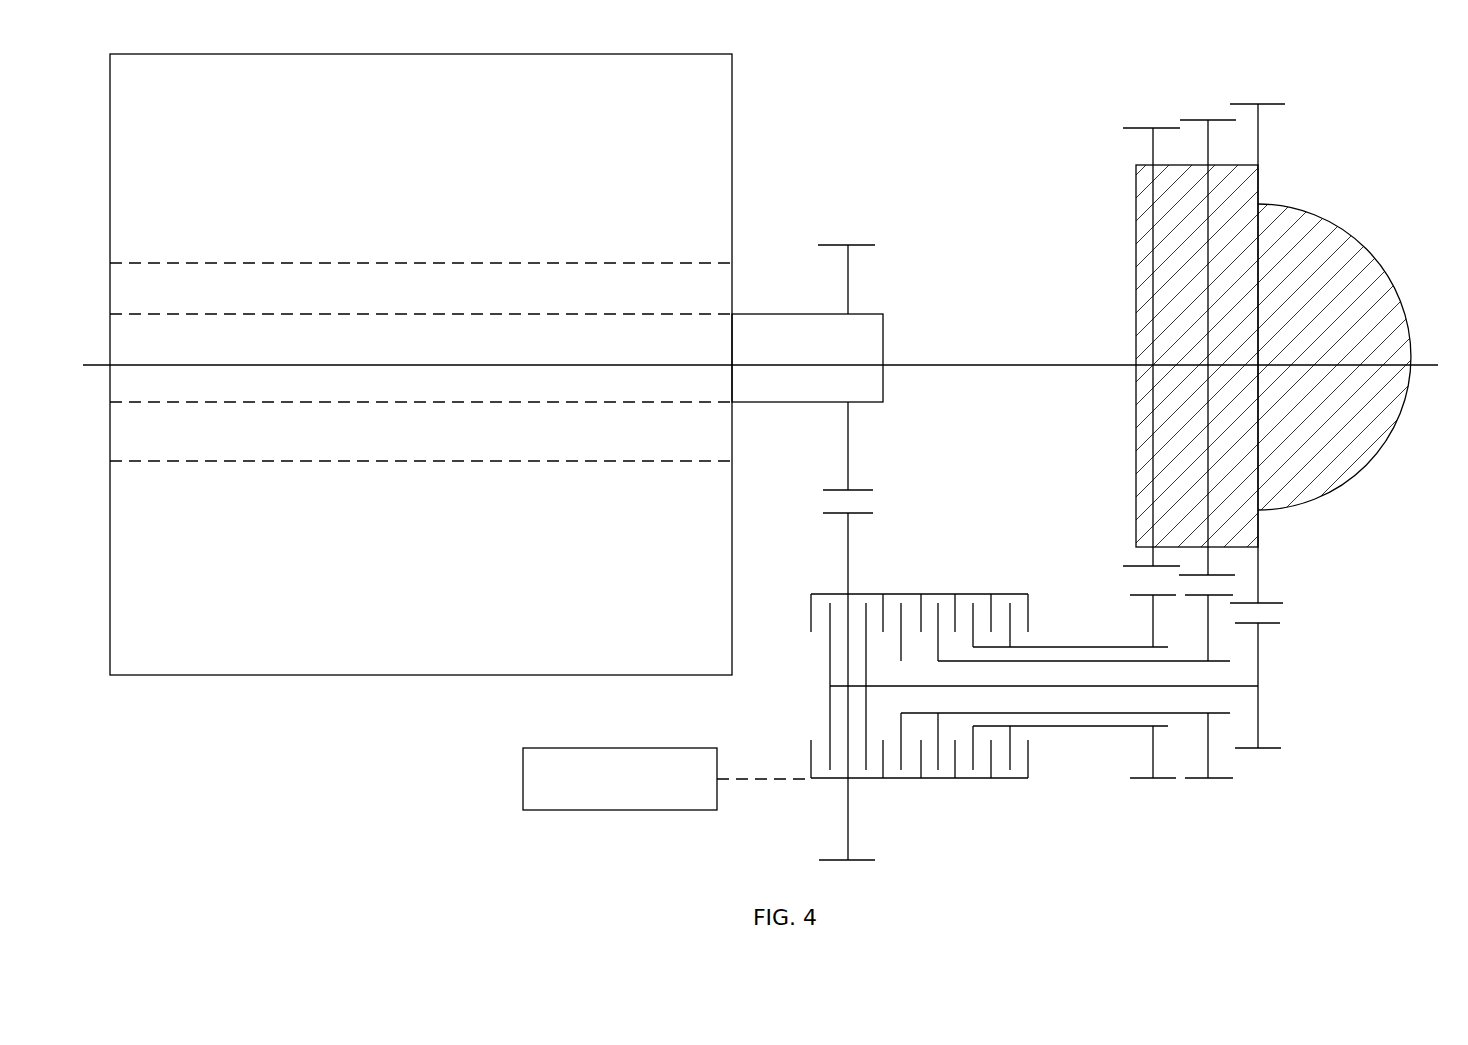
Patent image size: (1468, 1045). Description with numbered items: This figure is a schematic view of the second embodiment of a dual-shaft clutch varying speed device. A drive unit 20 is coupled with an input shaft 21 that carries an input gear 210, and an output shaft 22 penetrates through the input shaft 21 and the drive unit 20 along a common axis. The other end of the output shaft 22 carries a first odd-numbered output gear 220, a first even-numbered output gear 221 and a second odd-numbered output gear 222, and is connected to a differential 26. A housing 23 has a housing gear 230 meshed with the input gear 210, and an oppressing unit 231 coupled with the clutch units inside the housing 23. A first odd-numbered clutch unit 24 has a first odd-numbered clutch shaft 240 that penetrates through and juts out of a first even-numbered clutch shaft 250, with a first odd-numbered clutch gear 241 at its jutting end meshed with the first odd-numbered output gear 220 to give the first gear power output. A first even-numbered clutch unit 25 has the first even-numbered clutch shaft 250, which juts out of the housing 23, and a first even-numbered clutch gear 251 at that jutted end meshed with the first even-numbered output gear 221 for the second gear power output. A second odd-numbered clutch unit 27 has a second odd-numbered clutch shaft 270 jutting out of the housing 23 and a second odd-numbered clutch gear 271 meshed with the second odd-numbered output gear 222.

The drive unit 20 is at (208, 675).
The input shaft 21 is at (756, 314).
The input gear 210 is at (848, 284).
The output shaft 22 is at (978, 366).
The housing 23 is at (858, 783).
The housing gear 230 is at (870, 512).
The oppressing unit 231 is at (523, 772).
The first odd-numbered clutch unit 24 is at (830, 718).
The first odd-numbered clutch shaft 240 is at (1050, 686).
The first even-numbered clutch unit 25 is at (902, 752).
The first even-numbered clutch shaft 250 is at (1120, 713).
The first even-numbered clutch gear 251 is at (1208, 756).
The differential 26 is at (1368, 280).
The second odd-numbered clutch unit 27 is at (973, 757).
The second odd-numbered clutch shaft 270 is at (1055, 645).
The second odd-numbered clutch gear 271 is at (1150, 780).
The first odd-numbered output gear 220 is at (1258, 133).
The first even-numbered output gear 221 is at (1208, 118).
The second odd-numbered output gear 222 is at (1133, 565).
The first odd-numbered clutch gear 241 is at (1258, 712).